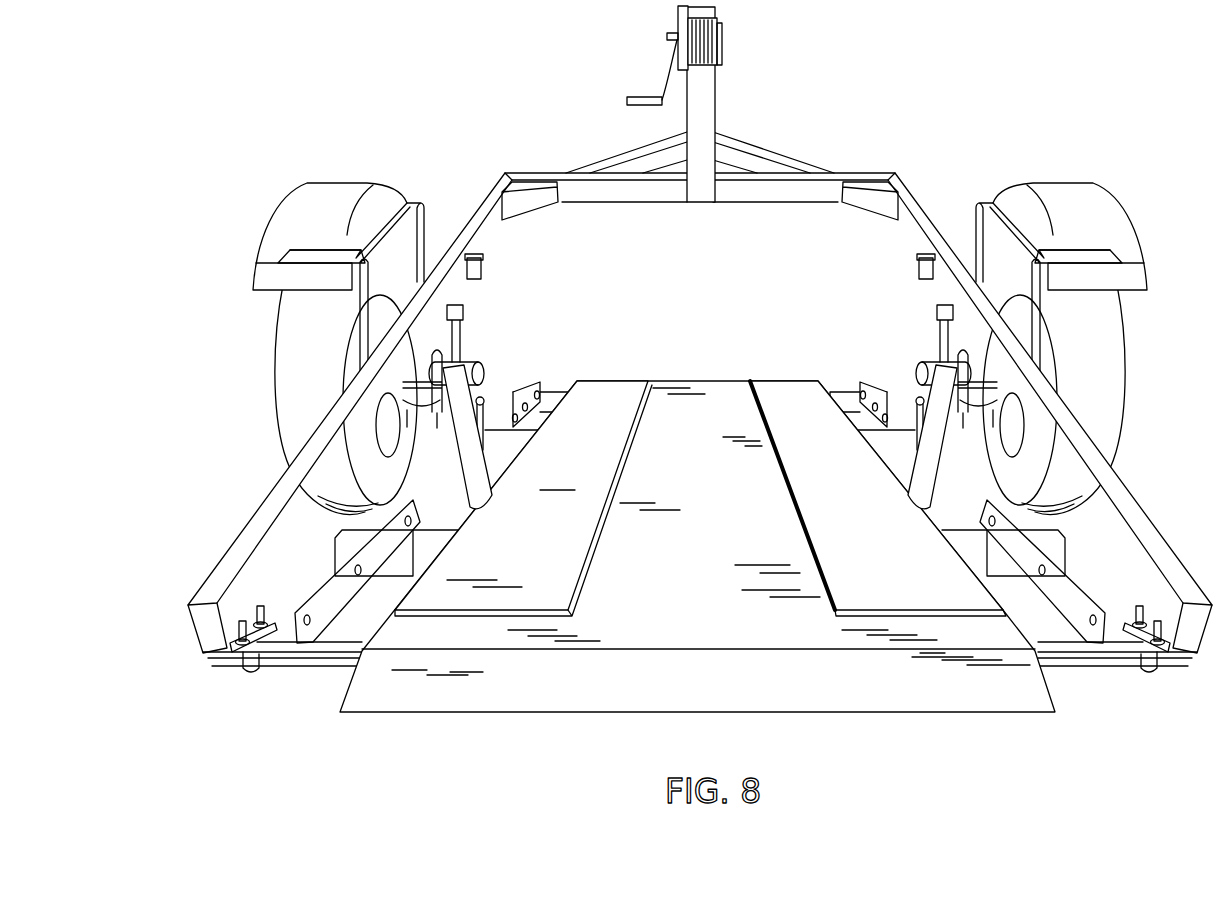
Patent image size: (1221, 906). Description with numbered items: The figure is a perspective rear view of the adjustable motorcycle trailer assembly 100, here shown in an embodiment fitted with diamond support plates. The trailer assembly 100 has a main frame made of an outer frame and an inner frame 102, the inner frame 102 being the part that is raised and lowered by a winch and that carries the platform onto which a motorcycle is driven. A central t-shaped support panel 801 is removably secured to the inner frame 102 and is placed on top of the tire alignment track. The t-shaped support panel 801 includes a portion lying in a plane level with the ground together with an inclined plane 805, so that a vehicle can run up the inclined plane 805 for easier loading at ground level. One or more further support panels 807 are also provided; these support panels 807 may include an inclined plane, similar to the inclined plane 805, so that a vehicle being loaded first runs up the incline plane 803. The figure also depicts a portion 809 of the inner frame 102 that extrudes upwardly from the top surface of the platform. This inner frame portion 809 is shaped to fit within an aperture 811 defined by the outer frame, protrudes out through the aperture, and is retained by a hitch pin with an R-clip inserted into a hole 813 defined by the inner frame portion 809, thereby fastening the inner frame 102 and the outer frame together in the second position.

The trailer assembly 100 is at (915, 128).
The inner frame 102 is at (585, 392).
The t-shaped support panel 801 is at (777, 628).
The incline plane 803 is at (768, 543).
The inclined plane 805 is at (598, 688).
The support panels 807 is at (495, 545).
The inner frame portion 809 is at (485, 428).
The aperture 811 is at (483, 262).
The hole 813 is at (485, 398).